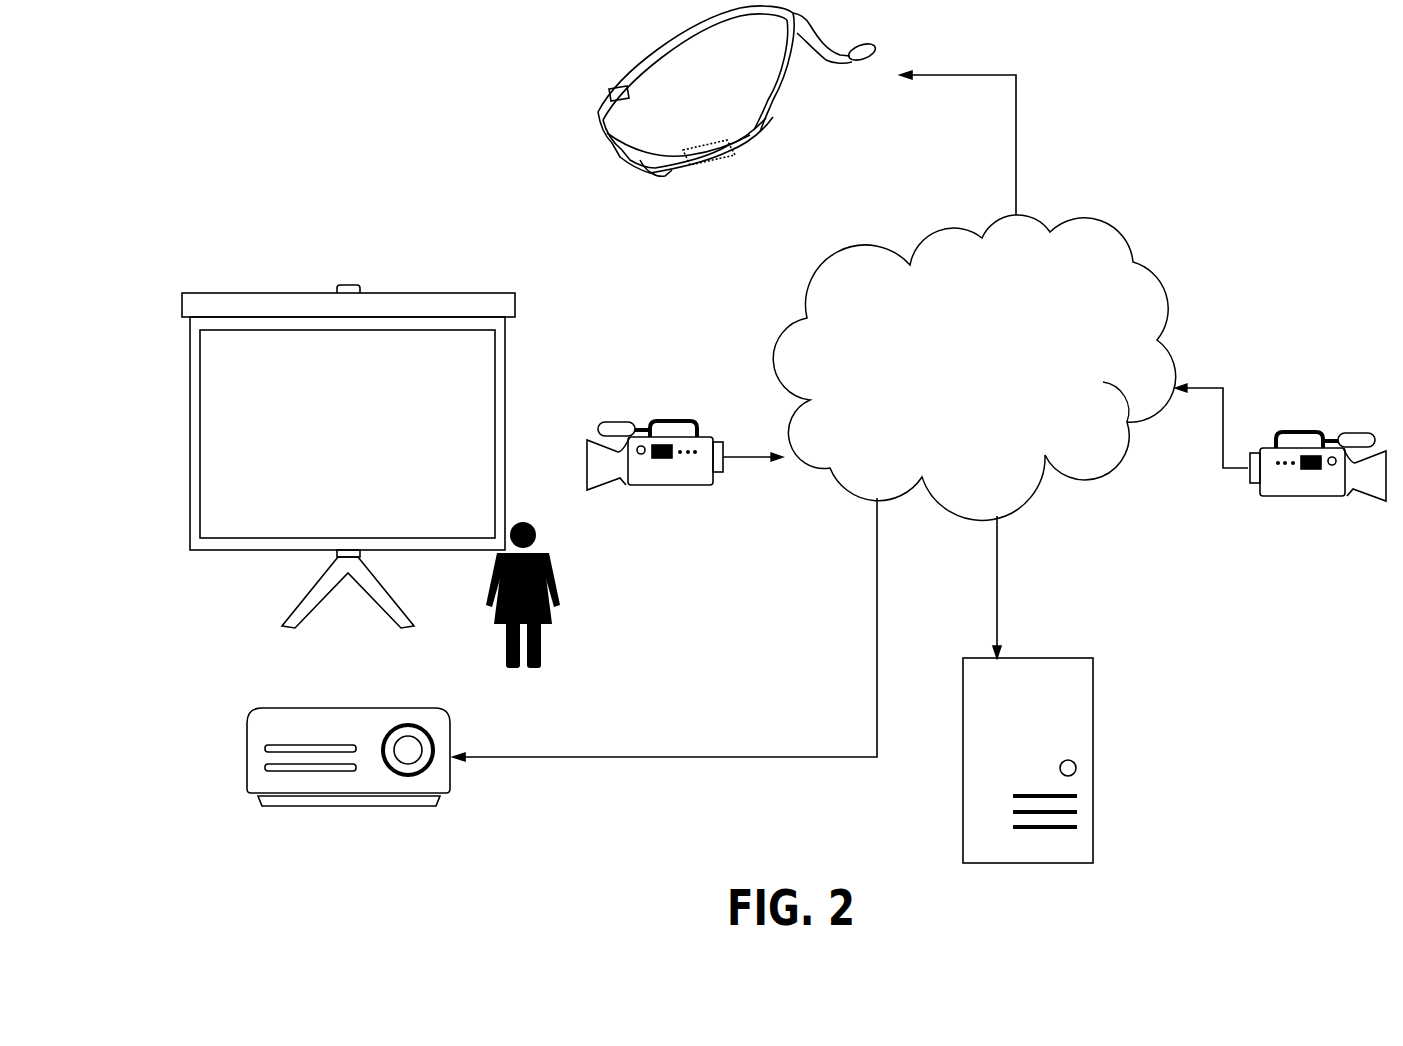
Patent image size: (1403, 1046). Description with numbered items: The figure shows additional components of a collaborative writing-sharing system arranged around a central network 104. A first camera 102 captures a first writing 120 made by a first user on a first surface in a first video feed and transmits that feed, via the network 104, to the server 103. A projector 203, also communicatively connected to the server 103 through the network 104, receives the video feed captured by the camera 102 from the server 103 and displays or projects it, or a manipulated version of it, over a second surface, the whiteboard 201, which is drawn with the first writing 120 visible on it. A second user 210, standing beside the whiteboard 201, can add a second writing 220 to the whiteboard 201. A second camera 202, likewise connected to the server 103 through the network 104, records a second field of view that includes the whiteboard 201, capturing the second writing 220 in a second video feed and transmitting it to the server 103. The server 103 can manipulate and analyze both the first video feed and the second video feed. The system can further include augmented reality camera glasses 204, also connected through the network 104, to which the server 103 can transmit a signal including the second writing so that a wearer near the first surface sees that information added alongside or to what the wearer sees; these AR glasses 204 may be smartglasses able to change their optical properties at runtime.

The augmented reality camera glasses 204 is at (570, 77).
The whiteboard 201 is at (213, 282).
The first writing 120 is at (243, 425).
The second writing 220 is at (188, 589).
The second user 210 is at (490, 663).
The projector 203 is at (348, 810).
The camera 202 is at (654, 497).
The camera 102 is at (1308, 500).
The network 104 is at (974, 367).
The server 103 is at (1113, 742).